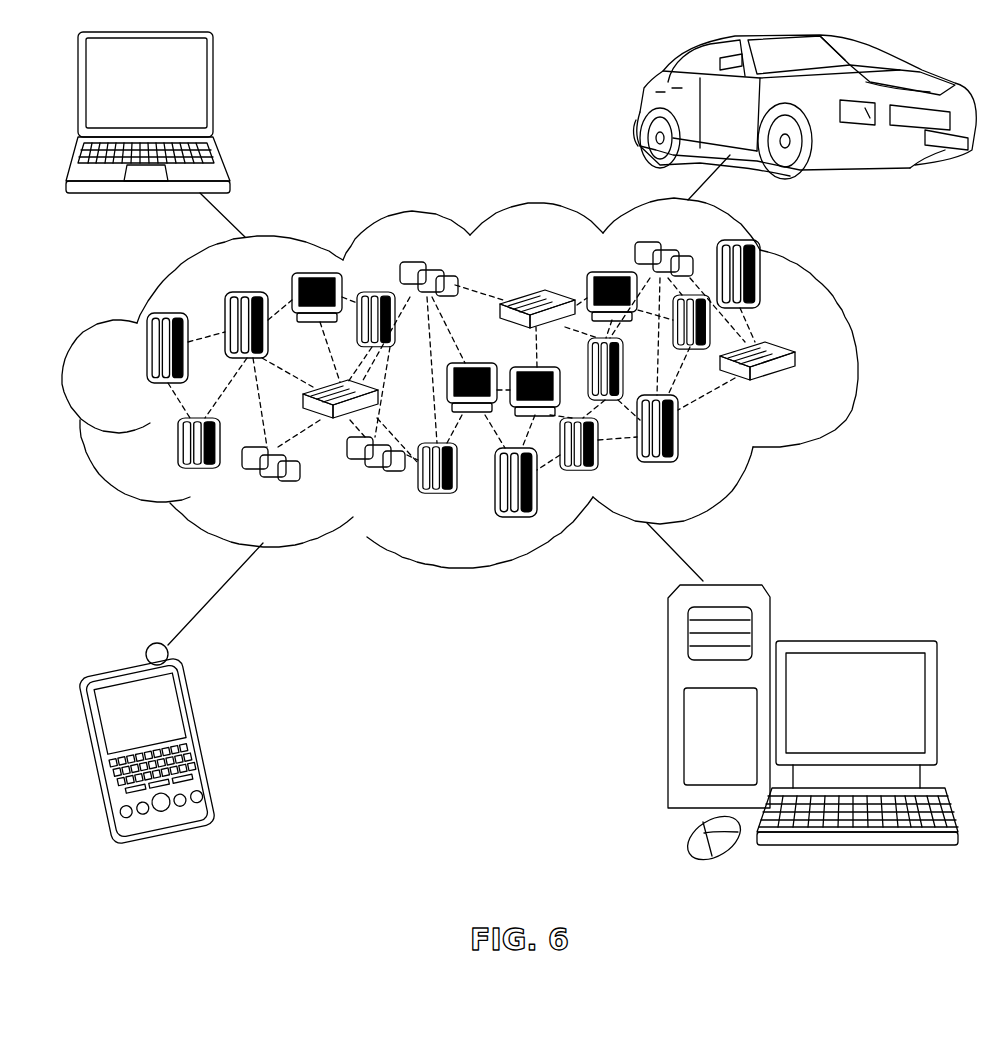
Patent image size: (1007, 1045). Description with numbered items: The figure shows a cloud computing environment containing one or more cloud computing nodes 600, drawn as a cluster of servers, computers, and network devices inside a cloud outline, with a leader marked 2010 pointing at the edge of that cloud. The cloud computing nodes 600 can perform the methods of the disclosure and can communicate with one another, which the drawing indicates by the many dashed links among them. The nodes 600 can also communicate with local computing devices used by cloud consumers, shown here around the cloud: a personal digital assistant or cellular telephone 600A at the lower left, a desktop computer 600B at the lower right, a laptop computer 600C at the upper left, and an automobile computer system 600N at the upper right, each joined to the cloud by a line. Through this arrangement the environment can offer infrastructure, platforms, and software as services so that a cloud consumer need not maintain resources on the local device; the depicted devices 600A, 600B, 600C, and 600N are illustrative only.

The cloud computing nodes 600 is at (800, 389).
The network cloud 2010 is at (855, 358).
The personal digital assistant or cellular telephone 600A is at (203, 733).
The desktop computer 600B is at (853, 640).
The laptop computer 600C is at (213, 92).
The automobile computer system 600N is at (643, 108).